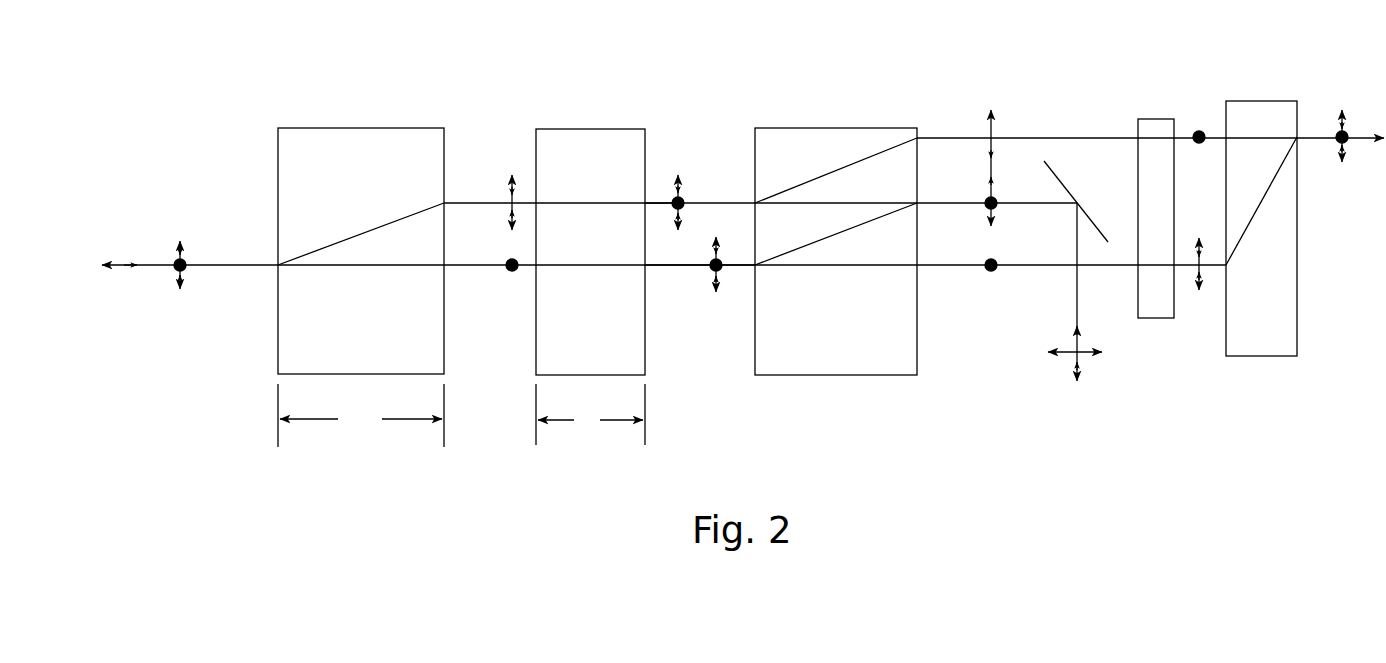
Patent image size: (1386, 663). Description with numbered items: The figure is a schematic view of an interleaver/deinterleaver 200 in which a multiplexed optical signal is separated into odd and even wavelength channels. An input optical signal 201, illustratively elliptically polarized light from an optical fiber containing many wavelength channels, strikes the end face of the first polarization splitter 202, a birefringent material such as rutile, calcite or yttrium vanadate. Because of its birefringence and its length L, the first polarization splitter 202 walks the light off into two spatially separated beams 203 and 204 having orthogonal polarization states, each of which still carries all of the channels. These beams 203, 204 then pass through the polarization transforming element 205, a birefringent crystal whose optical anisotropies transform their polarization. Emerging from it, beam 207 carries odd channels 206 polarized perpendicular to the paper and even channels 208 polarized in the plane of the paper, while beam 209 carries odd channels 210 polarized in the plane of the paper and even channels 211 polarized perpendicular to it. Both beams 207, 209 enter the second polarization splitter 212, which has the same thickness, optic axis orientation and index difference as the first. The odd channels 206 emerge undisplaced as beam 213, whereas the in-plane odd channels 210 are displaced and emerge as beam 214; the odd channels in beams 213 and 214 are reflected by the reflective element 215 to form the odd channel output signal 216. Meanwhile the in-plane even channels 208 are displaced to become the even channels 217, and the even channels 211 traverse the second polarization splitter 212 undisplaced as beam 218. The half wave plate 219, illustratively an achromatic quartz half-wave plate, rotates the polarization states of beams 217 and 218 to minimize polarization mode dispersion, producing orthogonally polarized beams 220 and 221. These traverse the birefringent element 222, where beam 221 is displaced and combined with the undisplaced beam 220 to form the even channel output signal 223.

The interleaver/deinterleaver 200 is at (262, 50).
The input optical signal 201 is at (180, 224).
The first polarization splitter 202 is at (354, 120).
The beam 203 is at (507, 163).
The beam 204 is at (509, 284).
The polarization transforming element 205 is at (580, 160).
The odd channels 206 is at (657, 206).
The beam 207 is at (653, 201).
The even channels 208 is at (684, 196).
The beam 209 is at (672, 268).
The odd channels 210 is at (725, 276).
The even channels 211 is at (723, 260).
The second polarization splitter 212 is at (838, 128).
The beam 213 is at (985, 205).
The beam 214 is at (996, 178).
The reflective element 215 is at (1095, 222).
The odd channel output signal 216 is at (1059, 368).
The even channels 217 is at (995, 105).
The beam 218 is at (991, 273).
The half wave plate 219 is at (1152, 118).
The beam 220 is at (1196, 300).
The beam 221 is at (1197, 130).
The birefringent element 222 is at (1265, 100).
The even channel output signal 223 is at (1340, 97).